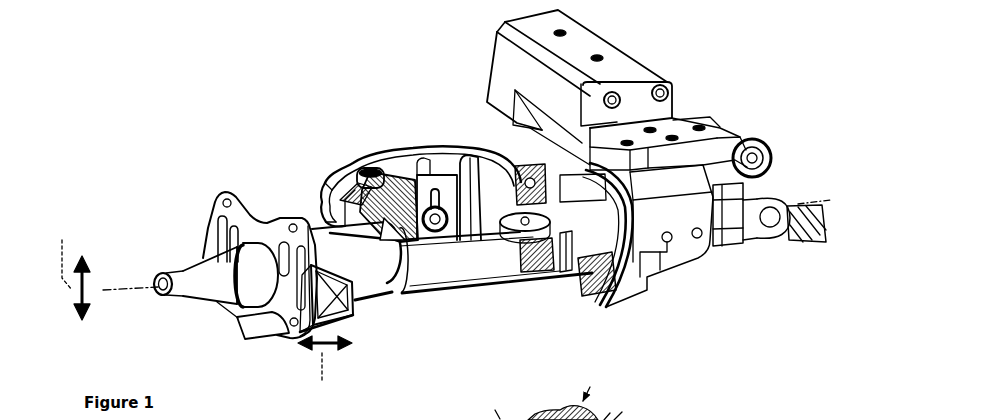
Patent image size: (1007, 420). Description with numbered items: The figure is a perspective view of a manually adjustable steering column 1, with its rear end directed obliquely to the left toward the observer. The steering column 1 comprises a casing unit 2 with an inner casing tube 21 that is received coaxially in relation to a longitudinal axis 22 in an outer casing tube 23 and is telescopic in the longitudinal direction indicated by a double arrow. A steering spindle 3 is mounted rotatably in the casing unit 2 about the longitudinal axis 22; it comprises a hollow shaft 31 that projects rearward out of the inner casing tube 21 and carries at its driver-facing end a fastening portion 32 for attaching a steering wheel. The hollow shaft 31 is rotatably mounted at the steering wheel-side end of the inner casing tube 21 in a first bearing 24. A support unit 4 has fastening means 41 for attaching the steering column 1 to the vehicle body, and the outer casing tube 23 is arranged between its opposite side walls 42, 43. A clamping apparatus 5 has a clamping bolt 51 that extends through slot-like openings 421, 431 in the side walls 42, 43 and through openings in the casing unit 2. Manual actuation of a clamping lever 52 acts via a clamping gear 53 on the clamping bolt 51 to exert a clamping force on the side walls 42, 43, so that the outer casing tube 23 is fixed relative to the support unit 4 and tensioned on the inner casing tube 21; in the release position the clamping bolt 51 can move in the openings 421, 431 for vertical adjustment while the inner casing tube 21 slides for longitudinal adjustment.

The steering column 1 is at (749, 39).
The casing unit 2 is at (441, 317).
The inner casing tube 21 is at (373, 270).
The longitudinal axis 22 is at (103, 290).
The outer casing tube 23 is at (462, 268).
The first bearing 24 is at (205, 262).
The steering spindle 3 is at (207, 276).
The hollow shaft 31 is at (233, 281).
The fastening portion 32 is at (168, 298).
The support unit 4 is at (438, 187).
The fastening means 41 is at (540, 168).
The side wall 42 is at (340, 185).
The slot-like opening 421 is at (345, 172).
The side wall 43 is at (453, 170).
The slot-like opening 431 is at (436, 190).
The clamping apparatus 5 is at (366, 147).
The clamping bolt 51 is at (392, 197).
The clamping lever 52 is at (260, 337).
The clamping gear 53 is at (331, 181).